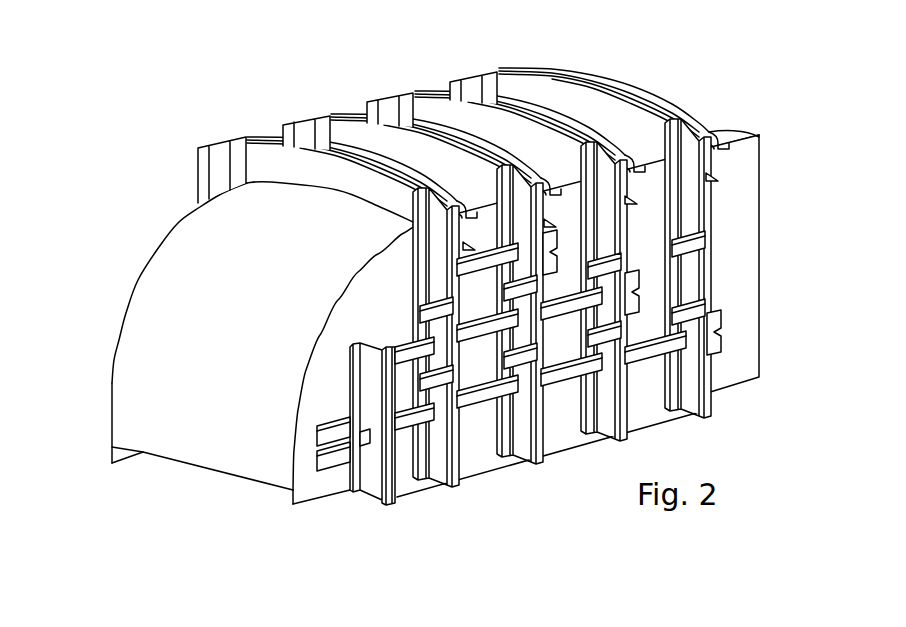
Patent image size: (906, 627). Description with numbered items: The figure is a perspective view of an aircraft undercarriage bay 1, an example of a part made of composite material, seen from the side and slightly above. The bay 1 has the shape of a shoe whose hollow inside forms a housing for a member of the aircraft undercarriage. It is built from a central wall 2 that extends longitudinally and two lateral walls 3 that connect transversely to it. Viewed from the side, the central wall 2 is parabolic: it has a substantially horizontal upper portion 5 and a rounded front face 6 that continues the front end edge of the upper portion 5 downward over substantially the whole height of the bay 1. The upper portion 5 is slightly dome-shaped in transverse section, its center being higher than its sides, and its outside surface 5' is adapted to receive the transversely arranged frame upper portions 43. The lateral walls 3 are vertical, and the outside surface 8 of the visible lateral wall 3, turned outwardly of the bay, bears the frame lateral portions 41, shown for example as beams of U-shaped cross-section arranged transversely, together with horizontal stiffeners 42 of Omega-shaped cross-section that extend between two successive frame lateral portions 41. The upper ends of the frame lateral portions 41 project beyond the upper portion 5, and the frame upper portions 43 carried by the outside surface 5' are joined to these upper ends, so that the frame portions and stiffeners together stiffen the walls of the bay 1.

The undercarriage bay 1 is at (437, 302).
The central wall 2 is at (491, 267).
The lateral wall 3 is at (602, 316).
The upper portion 5 is at (589, 89).
The outside surface 5' is at (743, 113).
The front face 6 is at (137, 407).
The outside surface 8 is at (758, 352).
The frame lateral portion 41 is at (708, 403).
The horizontal stiffener 42 is at (475, 420).
The frame upper portion 43 is at (328, 160).